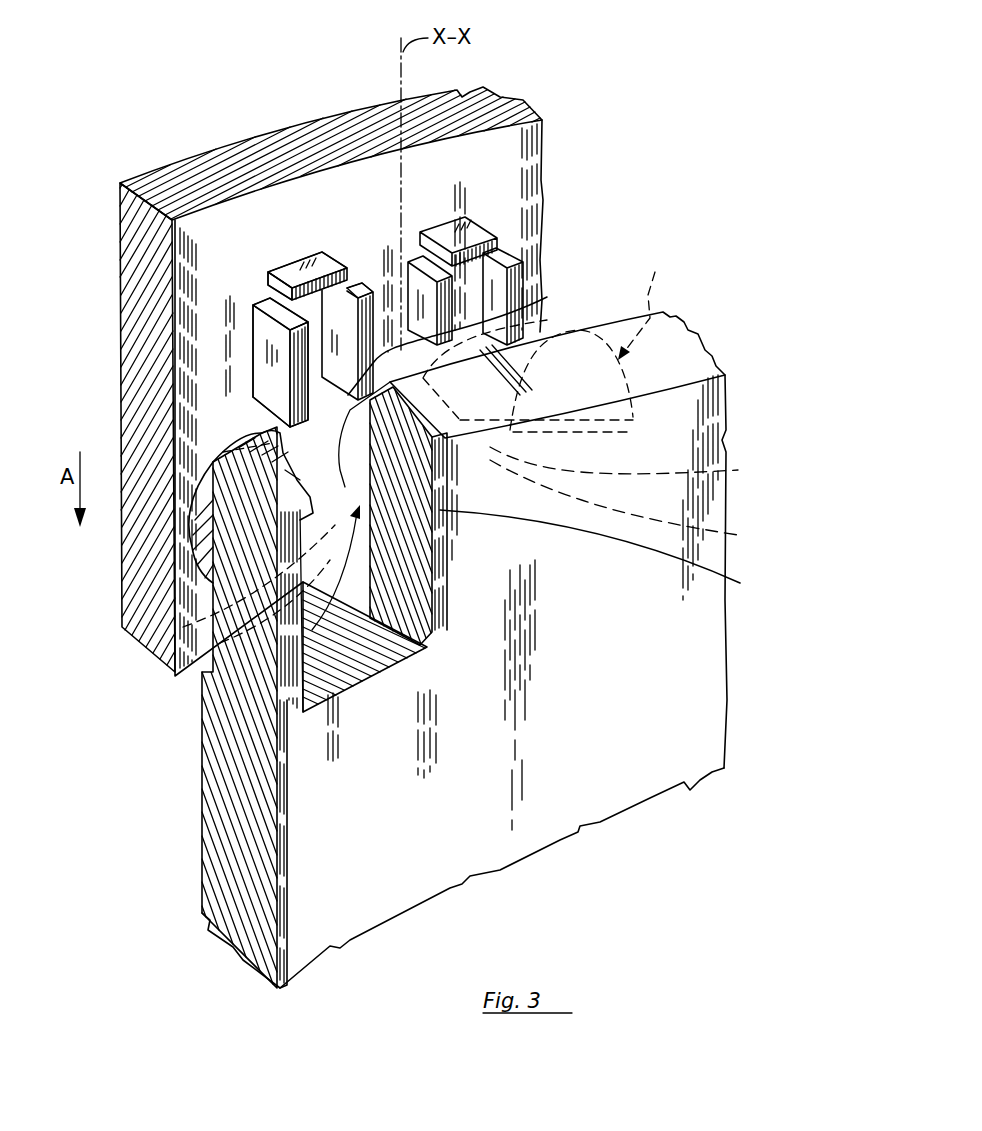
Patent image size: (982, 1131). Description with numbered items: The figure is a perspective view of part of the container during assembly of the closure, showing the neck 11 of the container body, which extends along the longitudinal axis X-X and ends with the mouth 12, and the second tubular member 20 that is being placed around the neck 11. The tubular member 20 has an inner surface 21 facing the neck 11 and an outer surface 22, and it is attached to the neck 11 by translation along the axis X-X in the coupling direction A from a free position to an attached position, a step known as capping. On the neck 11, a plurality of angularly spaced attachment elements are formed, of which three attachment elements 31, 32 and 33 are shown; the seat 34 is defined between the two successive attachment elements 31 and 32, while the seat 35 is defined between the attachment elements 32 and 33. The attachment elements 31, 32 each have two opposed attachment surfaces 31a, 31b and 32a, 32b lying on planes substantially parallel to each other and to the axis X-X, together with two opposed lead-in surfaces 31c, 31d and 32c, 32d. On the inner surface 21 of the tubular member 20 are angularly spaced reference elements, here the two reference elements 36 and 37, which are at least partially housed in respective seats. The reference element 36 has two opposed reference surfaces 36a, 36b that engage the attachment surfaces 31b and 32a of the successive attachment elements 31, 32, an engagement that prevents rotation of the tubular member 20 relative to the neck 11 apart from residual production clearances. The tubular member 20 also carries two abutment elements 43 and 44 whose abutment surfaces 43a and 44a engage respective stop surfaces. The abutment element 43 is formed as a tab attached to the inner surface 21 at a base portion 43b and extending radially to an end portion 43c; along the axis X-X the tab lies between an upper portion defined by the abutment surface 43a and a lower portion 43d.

The neck 11 is at (543, 800).
The mouth 12 is at (683, 417).
The second tubular member 20 is at (519, 105).
The inner surface 21 is at (517, 163).
The outer surface 22 is at (347, 112).
The attachment element 31 is at (168, 612).
The attachment surface 31a is at (197, 577).
The attachment surface 31b is at (162, 640).
The lead-in surface 31c is at (205, 515).
The lead-in surface 31d is at (273, 428).
The attachment element 32 is at (400, 641).
The attachment surface 32a is at (612, 556).
The attachment surface 32b is at (637, 506).
The lead-in surface 32c is at (550, 299).
The lead-in surface 32d is at (537, 331).
The attachment element 33 is at (652, 305).
The seat 34 is at (450, 487).
The seat 35 is at (631, 469).
The reference element 36 is at (268, 296).
The reference surface 36a is at (270, 276).
The reference surface 36b is at (330, 268).
The reference element 37 is at (468, 216).
The abutment element 43 is at (245, 325).
The abutment surface 43a is at (265, 324).
The base portion 43b is at (253, 355).
The end portion 43c is at (303, 372).
The lower portion 43d is at (256, 412).
The abutment element 44 is at (376, 325).
The abutment surface 44a is at (348, 285).